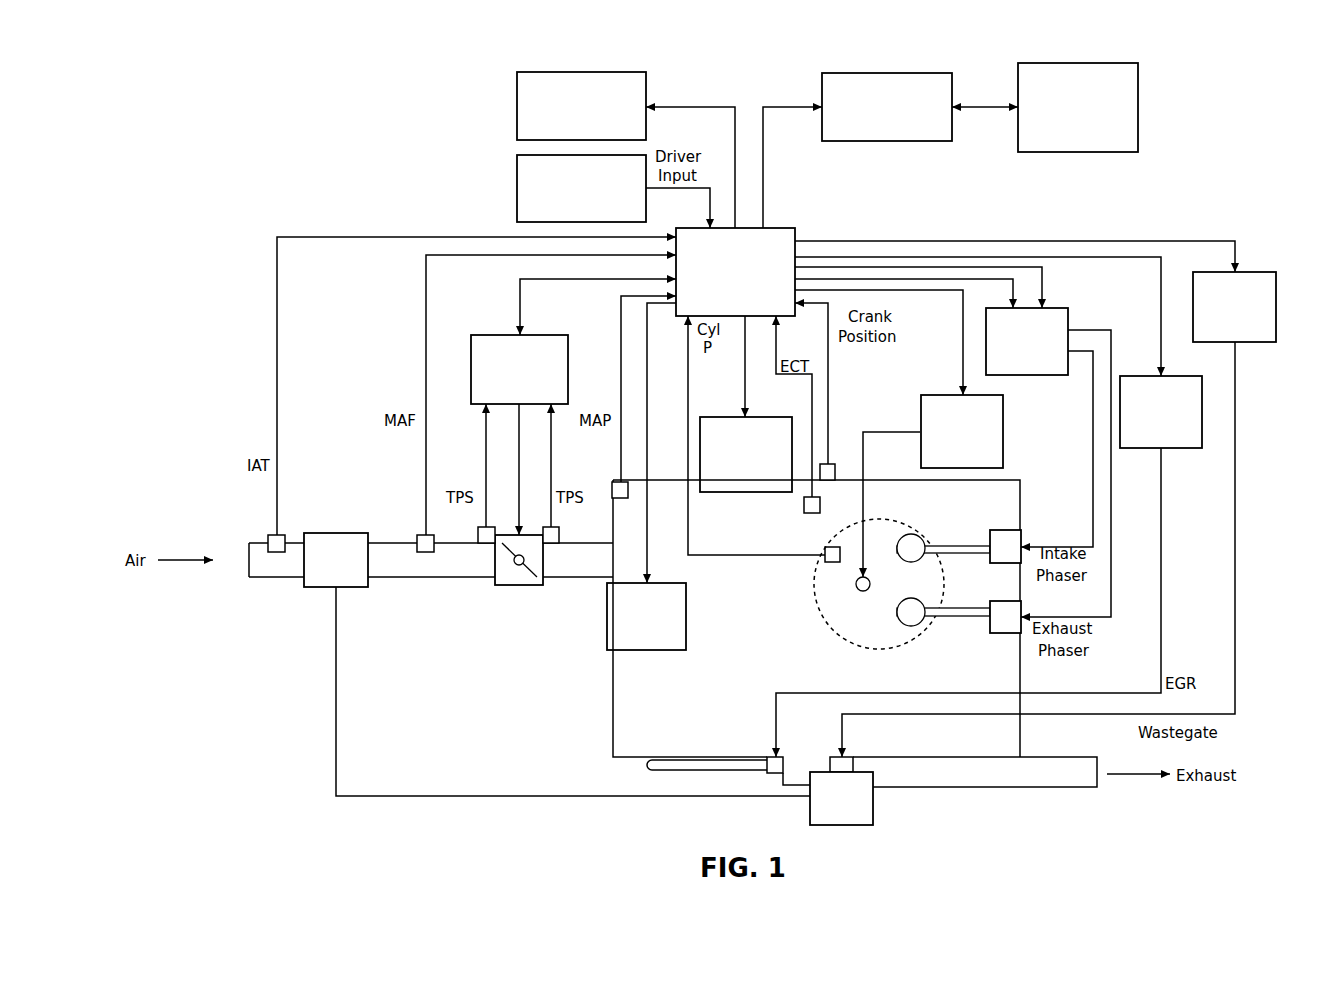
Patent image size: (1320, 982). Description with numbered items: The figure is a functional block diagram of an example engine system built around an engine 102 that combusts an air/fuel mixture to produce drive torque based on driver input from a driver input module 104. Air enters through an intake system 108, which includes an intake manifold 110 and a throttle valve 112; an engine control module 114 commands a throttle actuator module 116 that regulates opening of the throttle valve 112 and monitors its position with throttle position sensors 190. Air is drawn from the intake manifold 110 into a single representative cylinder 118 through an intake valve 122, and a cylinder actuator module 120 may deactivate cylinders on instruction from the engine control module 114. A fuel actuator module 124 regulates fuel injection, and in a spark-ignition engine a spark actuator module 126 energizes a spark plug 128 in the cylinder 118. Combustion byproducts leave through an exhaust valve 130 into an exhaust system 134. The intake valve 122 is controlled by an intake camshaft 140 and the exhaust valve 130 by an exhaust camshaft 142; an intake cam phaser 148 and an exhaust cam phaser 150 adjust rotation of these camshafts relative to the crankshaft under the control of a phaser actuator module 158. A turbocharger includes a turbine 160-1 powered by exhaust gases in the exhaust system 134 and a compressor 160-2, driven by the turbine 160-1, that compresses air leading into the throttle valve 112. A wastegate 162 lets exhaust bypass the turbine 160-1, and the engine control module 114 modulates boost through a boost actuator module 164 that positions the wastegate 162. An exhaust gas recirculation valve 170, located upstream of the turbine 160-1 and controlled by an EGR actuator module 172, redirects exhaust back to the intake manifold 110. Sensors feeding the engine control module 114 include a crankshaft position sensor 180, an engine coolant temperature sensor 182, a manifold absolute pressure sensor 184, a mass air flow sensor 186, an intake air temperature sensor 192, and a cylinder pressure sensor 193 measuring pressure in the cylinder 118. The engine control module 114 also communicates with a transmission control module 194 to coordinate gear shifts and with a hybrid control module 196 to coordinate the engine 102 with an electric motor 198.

The engine 102 is at (1021, 497).
The driver input module 104 is at (517, 187).
The intake system 108 is at (206, 605).
The intake manifold 110 is at (609, 701).
The throttle valve 112 is at (513, 585).
The engine control module 114 is at (796, 236).
The throttle actuator module 116 is at (493, 335).
The cylinder 118 is at (838, 640).
The cylinder actuator module 120 is at (756, 417).
The intake valve 122 is at (913, 534).
The fuel actuator module 124 is at (665, 650).
The spark actuator module 126 is at (1004, 433).
The spark plug 128 is at (857, 588).
The exhaust valve 130 is at (911, 627).
The exhaust system 134 is at (1070, 789).
The intake camshaft 140 is at (962, 546).
The exhaust camshaft 142 is at (965, 617).
The intake cam phaser 148 is at (1008, 530).
The exhaust cam phaser 150 is at (1006, 633).
The phaser actuator module 158 is at (1069, 320).
The turbine 160-1 is at (874, 808).
The compressor 160-2 is at (320, 587).
The wastegate 162 is at (853, 758).
The boost actuator module 164 is at (1258, 342).
The exhaust gas recirculation valve 170 is at (774, 773).
The EGR actuator module 172 is at (1182, 448).
The crankshaft position sensor 180 is at (828, 464).
The engine coolant temperature sensor 182 is at (812, 513).
The manifold absolute pressure sensor 184 is at (620, 482).
The mass air flow sensor 186 is at (418, 537).
The throttle position sensor 190 is at (487, 545).
The intake air temperature sensor 192 is at (269, 537).
The cylinder pressure sensor 193 is at (828, 562).
The transmission control module 194 is at (517, 106).
The hybrid control module 196 is at (888, 141).
The electric motor 198 is at (1088, 152).